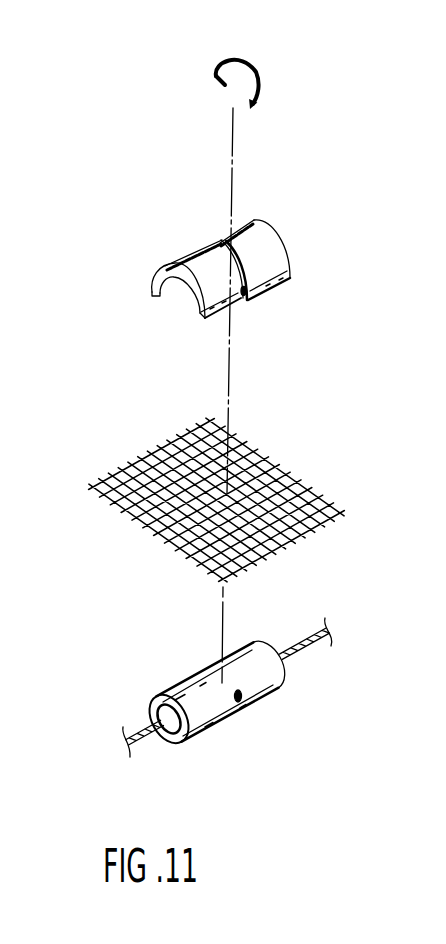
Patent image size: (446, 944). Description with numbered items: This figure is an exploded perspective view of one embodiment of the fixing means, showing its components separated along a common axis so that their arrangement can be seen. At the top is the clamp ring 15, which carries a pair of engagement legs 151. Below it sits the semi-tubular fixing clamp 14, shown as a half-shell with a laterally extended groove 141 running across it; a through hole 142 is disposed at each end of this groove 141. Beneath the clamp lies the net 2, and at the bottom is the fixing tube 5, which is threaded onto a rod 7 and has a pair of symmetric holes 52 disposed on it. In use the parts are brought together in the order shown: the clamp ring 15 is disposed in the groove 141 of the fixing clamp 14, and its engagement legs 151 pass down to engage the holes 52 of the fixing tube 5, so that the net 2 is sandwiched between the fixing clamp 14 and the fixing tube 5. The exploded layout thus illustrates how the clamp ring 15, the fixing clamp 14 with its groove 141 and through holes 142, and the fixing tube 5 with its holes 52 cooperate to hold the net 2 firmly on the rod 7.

The wire mesh grid 2 is at (291, 472).
The fixing tube 5 is at (249, 728).
The symmetric holes 52 is at (238, 702).
The rod 7 is at (305, 630).
The semi-tubular fixing clamp 14 is at (234, 264).
The laterally extended groove 141 is at (211, 248).
The through hole 142 is at (243, 299).
The clamp ring 15 is at (262, 76).
The engagement legs 151 is at (224, 86).